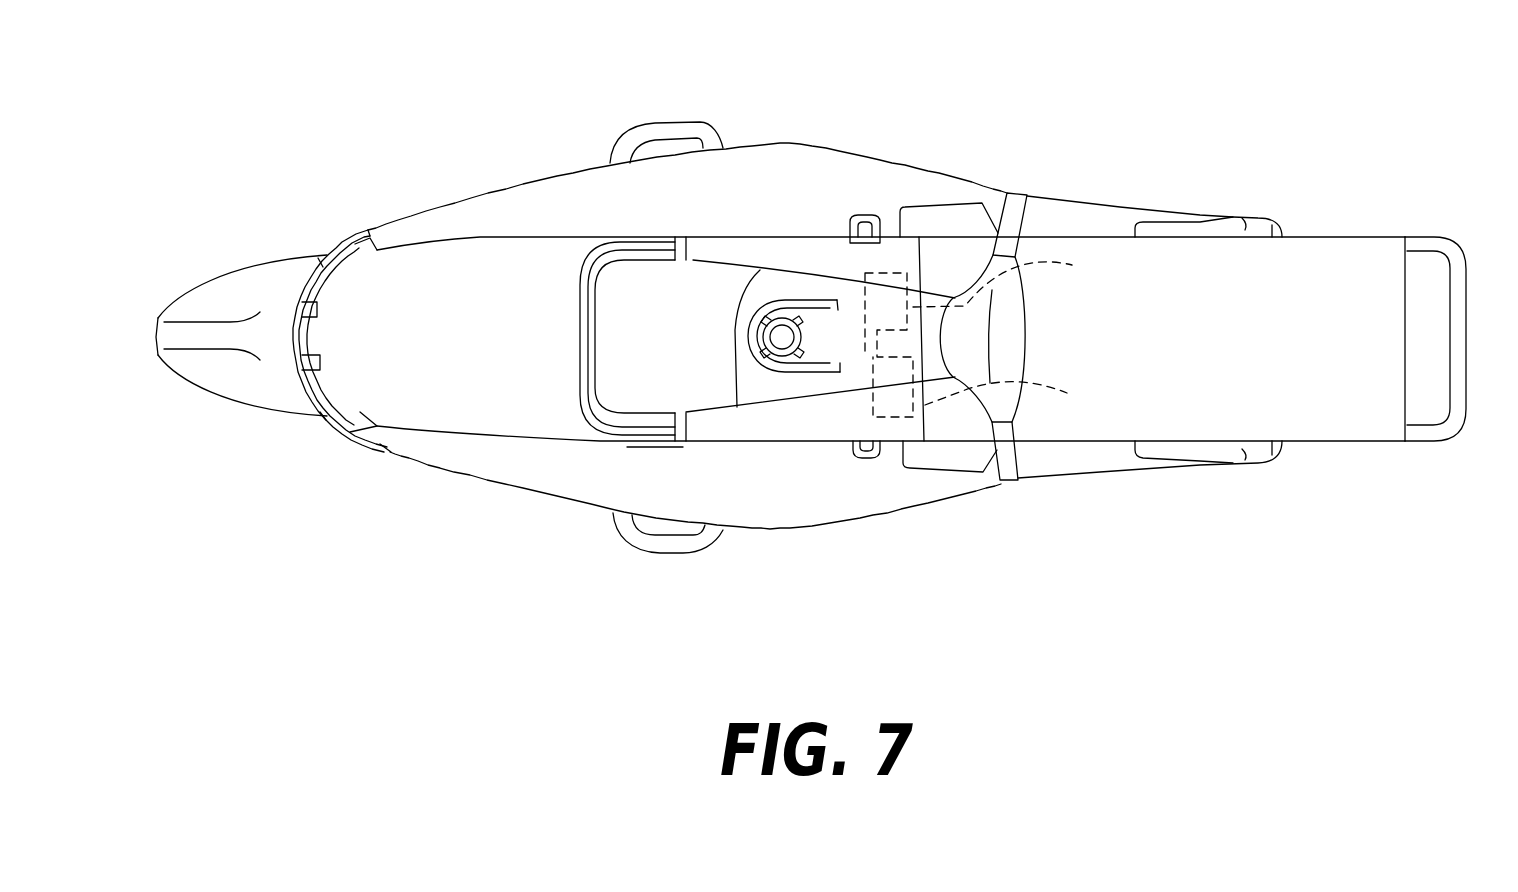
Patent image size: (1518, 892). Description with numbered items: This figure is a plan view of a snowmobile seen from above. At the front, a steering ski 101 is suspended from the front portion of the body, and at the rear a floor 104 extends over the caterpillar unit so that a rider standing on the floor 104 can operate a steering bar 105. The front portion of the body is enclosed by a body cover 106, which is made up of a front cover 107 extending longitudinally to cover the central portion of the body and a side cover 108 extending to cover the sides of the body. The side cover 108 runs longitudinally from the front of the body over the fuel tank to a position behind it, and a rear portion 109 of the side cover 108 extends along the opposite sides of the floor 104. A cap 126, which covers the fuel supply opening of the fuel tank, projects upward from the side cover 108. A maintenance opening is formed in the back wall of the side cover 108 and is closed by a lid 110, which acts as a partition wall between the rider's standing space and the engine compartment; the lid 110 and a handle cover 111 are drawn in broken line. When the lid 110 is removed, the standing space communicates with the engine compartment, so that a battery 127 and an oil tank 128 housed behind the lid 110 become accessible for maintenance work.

The steering ski 101 is at (268, 268).
The floor 104 is at (1280, 365).
The steering bar 105 is at (1013, 463).
The body cover 106 is at (570, 132).
The front cover 107 is at (427, 255).
The side cover 108 is at (512, 203).
The rear portion of the side cover 109 is at (1052, 211).
The lid 110 is at (897, 247).
The handle cover 111 is at (980, 338).
The cap 126 is at (780, 318).
The battery 127 is at (1022, 400).
The oil tank 128 is at (1021, 284).